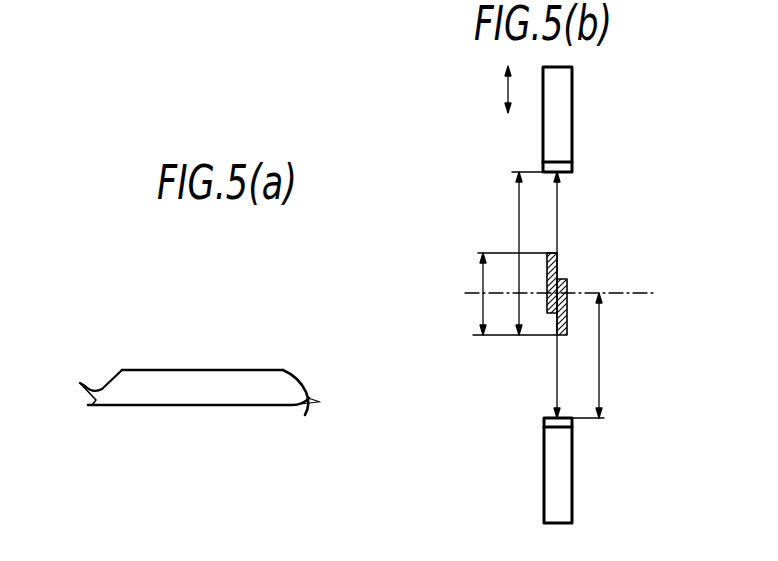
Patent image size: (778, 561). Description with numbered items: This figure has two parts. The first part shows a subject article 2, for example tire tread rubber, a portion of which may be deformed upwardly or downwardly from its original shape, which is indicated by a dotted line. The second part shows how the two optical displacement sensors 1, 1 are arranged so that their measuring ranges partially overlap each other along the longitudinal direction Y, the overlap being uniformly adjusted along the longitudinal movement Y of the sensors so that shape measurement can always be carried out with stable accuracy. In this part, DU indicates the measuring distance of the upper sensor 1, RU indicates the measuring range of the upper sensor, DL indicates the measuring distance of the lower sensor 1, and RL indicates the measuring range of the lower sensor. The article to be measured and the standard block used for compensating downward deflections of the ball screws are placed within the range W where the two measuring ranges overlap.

The optical displacement sensor 1 is at (571, 115).
The subject article 2 is at (197, 378).
The measuring distance of the upper sensor DU is at (518, 230).
The measuring distance of the lower sensor DL is at (600, 377).
The measuring range of the upper sensor RU is at (558, 265).
The measuring range of the lower sensor RL is at (565, 307).
The range W is at (468, 294).
The longitudinal direction Y is at (495, 87).